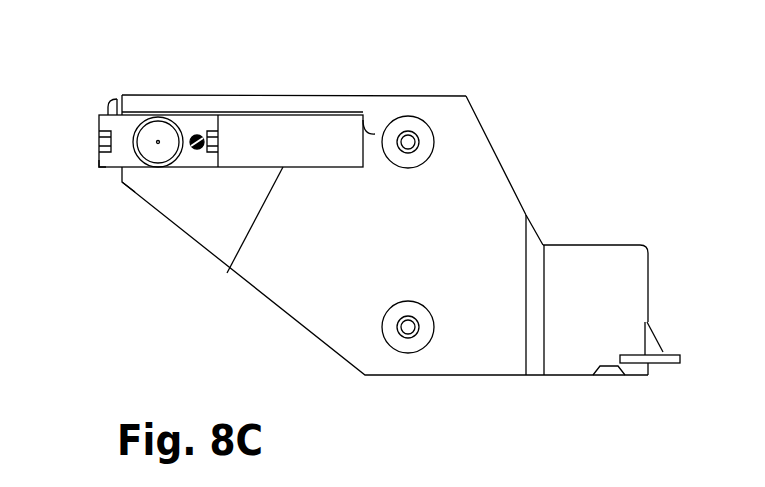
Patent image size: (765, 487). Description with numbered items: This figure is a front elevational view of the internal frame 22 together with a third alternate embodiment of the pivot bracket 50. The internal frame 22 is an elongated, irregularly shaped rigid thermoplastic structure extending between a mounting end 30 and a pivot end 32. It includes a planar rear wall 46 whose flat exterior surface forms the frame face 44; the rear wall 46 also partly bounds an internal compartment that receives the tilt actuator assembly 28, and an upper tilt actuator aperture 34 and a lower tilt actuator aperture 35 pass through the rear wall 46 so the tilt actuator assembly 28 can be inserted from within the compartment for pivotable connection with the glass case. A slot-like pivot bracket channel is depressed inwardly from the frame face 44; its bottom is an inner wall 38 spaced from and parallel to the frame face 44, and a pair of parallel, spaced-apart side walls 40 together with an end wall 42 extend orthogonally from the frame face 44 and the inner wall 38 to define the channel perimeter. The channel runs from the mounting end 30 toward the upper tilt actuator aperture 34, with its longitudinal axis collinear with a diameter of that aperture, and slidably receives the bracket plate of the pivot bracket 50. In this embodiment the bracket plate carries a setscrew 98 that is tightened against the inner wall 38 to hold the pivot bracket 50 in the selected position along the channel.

The internal frame 22 is at (607, 245).
The tilt actuator assembly 28 is at (407, 131).
The mounting end 30 is at (140, 222).
The pivot end 32 is at (658, 366).
The upper tilt actuator aperture 34 is at (426, 118).
The lower tilt actuator aperture 35 is at (394, 345).
The inner wall 38 is at (323, 130).
The side walls 40 is at (273, 118).
The end wall 42 is at (362, 134).
The frame face 44 is at (294, 243).
The rear wall 46 is at (463, 188).
The pivot bracket 50 is at (98, 168).
The setscrew 98 is at (196, 135).